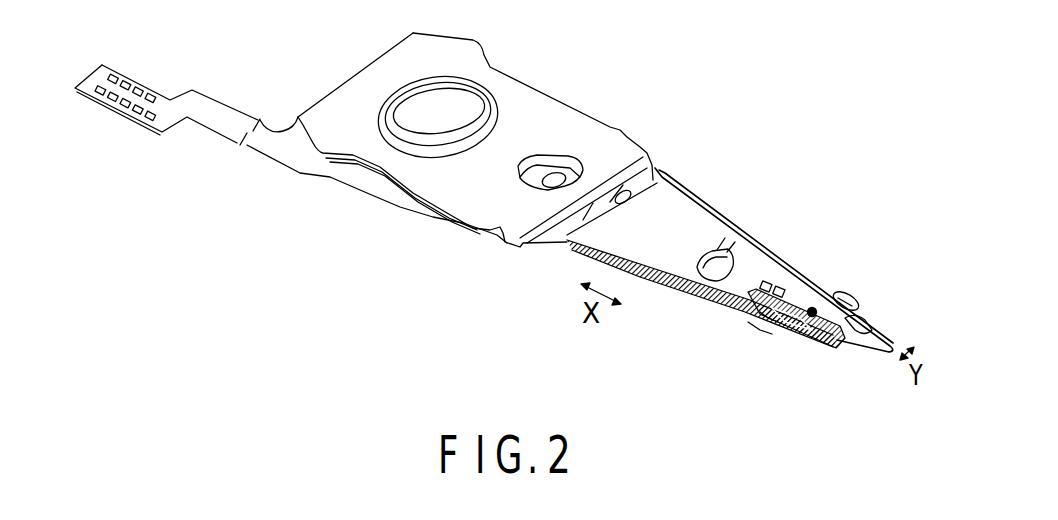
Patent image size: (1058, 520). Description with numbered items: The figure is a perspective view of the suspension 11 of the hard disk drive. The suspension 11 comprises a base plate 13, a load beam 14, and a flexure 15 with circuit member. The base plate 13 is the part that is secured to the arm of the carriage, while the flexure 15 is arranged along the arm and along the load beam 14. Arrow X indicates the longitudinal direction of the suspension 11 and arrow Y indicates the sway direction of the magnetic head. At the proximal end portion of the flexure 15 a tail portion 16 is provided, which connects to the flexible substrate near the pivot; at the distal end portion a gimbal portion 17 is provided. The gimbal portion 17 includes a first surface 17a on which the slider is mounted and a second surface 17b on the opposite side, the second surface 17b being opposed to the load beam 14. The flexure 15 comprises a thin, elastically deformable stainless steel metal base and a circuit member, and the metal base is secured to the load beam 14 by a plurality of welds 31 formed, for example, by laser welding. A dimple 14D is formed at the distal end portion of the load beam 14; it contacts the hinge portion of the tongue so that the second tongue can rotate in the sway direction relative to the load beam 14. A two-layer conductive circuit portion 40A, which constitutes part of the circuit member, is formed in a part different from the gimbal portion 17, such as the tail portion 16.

The suspension 11 is at (652, 110).
The base plate 13 is at (541, 117).
The load beam 14 is at (741, 300).
The dimple 14D is at (815, 306).
The flexure 15 is at (847, 292).
The tail portion 16 is at (118, 113).
The gimbal portion 17 is at (802, 358).
The first surface 17a is at (767, 338).
The second surface 17b is at (753, 328).
The welds 31 is at (747, 257).
The two-layer conductive circuit portion 40A is at (287, 153).